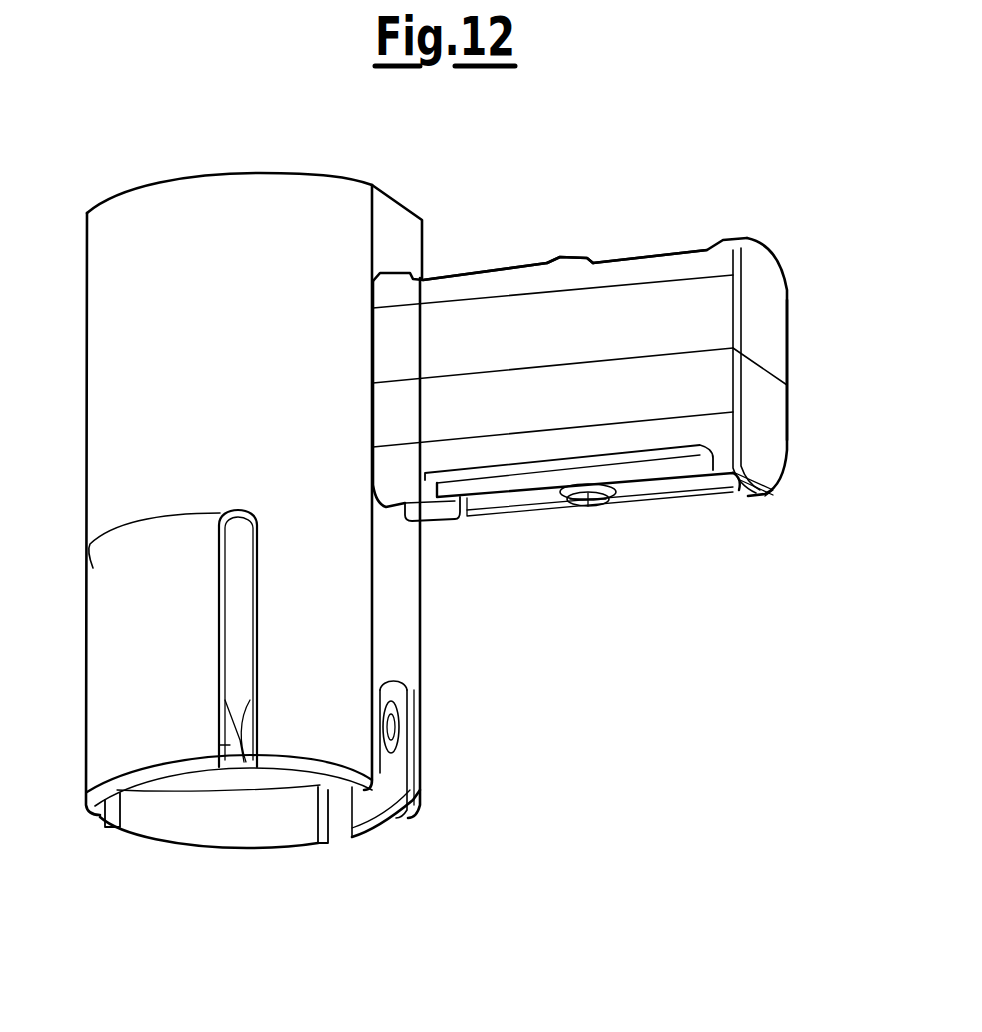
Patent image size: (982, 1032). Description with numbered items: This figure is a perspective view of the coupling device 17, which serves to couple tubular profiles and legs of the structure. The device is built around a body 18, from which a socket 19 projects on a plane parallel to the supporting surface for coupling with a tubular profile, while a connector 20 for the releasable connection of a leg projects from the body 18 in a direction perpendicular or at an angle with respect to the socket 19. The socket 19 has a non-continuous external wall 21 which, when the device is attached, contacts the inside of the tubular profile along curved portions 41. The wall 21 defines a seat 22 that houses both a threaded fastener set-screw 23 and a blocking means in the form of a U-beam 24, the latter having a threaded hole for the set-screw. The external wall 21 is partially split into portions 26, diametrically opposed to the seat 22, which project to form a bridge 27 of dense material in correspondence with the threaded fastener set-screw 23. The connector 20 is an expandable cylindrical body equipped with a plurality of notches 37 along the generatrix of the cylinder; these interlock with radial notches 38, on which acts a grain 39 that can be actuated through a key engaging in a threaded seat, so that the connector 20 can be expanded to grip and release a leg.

The coupling device 17 is at (488, 177).
The body 18 is at (158, 213).
The socket 19 is at (792, 418).
The connector 20 is at (110, 638).
The external wall 21 is at (700, 322).
The seat 22 is at (440, 507).
The threaded fastener set-screw 23 is at (600, 515).
The U-beam 24 is at (670, 493).
The portions 26 is at (490, 273).
The bridge 27 is at (575, 253).
The notches 37 is at (230, 623).
The radial notches 38 is at (225, 770).
The grain 39 is at (233, 727).
The curved portions 41 is at (722, 260).